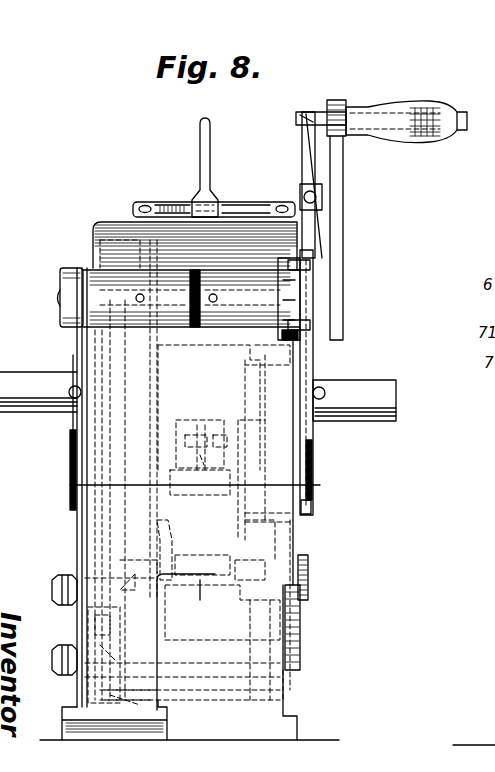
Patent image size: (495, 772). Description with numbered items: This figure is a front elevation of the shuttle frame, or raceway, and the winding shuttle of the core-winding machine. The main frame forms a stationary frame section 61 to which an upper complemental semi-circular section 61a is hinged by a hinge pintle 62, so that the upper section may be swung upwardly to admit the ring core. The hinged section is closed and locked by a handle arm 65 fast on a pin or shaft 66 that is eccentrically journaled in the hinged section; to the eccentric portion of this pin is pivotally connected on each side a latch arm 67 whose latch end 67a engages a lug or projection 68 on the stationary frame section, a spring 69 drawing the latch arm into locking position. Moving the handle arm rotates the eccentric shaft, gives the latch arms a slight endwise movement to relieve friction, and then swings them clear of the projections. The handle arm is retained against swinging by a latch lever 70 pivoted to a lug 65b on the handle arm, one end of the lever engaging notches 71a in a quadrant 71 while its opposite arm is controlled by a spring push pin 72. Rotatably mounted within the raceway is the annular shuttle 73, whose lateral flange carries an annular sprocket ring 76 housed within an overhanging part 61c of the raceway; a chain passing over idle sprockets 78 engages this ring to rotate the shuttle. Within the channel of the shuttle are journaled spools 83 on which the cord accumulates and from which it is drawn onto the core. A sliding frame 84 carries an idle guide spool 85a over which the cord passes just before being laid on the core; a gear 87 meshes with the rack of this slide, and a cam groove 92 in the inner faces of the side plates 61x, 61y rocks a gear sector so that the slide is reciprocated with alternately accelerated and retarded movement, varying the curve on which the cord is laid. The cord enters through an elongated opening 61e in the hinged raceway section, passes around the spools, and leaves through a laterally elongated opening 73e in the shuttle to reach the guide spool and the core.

The stationary frame section 61 is at (275, 550).
The upper complemental semi-circular section 61a is at (112, 224).
The overhanging part 61c is at (77, 580).
The elongated opening 61e is at (258, 204).
The side plate 61x is at (297, 605).
The side plate 61y is at (330, 380).
The hinge pintle 62 is at (50, 378).
The handle arm 65 is at (343, 230).
The lug 65b is at (316, 197).
The pin or shaft 66 is at (343, 305).
The latch arm 67 is at (78, 340).
The latch end 67a is at (313, 506).
The lug or projection 68 is at (314, 487).
The spring 69 is at (72, 398).
The latch lever 70 is at (302, 163).
The quadrant 71 is at (285, 299).
The notches 71a is at (318, 266).
The spring push pin 72 is at (322, 118).
The annular shuttle 73 is at (188, 600).
The laterally elongated opening 73e is at (150, 585).
The annular sprocket ring 76 is at (104, 655).
The idle sprocket 78 is at (165, 708).
The spool 83 is at (210, 348).
The sliding frame 84 is at (218, 580).
The idle guide spool 85a is at (205, 428).
The gear 87 is at (180, 575).
The cam groove 92 is at (306, 560).